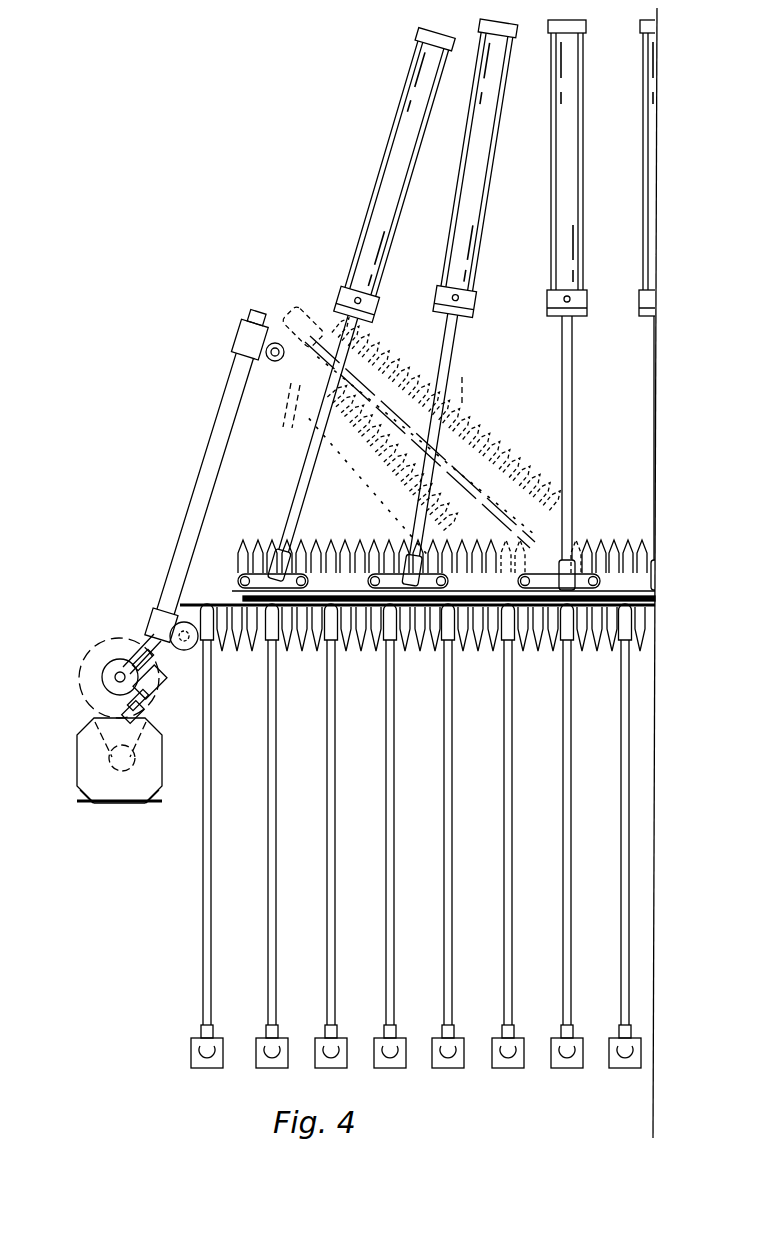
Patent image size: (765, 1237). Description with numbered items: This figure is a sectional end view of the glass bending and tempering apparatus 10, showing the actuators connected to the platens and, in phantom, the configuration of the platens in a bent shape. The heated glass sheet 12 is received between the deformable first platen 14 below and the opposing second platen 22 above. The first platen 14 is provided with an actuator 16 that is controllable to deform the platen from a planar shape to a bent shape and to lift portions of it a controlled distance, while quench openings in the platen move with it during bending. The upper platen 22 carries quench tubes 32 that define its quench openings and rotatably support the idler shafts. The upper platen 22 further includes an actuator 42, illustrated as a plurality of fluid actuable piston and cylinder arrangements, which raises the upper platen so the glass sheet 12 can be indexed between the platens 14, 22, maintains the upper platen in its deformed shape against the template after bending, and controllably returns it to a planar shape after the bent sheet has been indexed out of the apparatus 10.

The glass bending and tempering apparatus 10 is at (244, 138).
The heated glass sheet 12 is at (327, 352).
The first platen 14 is at (238, 658).
The actuator 16 is at (203, 905).
The second platen 22 is at (227, 555).
The quench tubes 32 is at (258, 540).
The actuator 42 is at (407, 103).